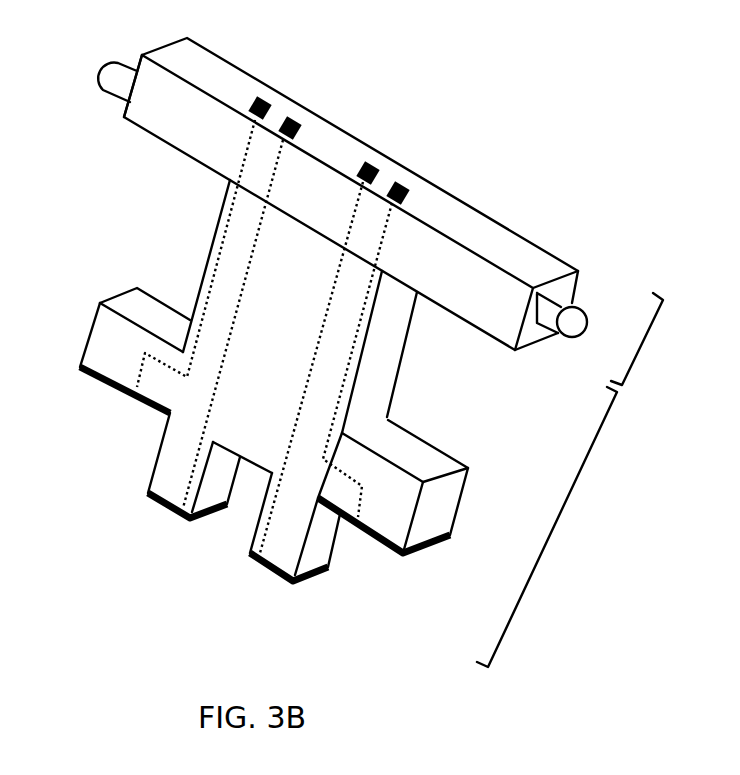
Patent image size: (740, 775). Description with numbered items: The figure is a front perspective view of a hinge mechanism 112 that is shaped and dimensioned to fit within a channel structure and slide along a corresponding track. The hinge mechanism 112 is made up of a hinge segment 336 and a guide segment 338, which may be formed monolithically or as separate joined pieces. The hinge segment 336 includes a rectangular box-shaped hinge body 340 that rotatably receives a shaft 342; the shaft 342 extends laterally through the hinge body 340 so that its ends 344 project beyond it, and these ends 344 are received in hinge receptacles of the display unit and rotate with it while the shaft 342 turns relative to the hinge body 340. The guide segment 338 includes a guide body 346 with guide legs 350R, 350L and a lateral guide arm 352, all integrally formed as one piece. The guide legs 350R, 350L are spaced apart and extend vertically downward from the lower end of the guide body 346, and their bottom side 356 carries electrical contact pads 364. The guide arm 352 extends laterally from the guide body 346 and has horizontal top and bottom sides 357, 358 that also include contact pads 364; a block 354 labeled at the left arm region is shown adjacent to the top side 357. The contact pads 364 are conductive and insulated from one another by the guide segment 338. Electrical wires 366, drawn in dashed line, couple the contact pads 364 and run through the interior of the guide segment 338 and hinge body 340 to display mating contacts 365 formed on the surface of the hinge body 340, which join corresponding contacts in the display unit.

The hinge mechanism 112 is at (424, 112).
The hinge body 340 is at (350, 216).
The shaft 342 is at (104, 55).
The ends of the shaft 344 is at (102, 79).
The display mating contacts 365 is at (265, 100).
The guide body 346 is at (304, 331).
The electrical wires 366 is at (229, 220).
The left block 354 is at (108, 338).
The top side of the guide arm 357 is at (153, 317).
The bottom side of the guide arm 358 is at (103, 370).
The bottom side of the guide legs 356 is at (157, 490).
The right guide leg 350R is at (175, 495).
The left guide leg 350L is at (274, 560).
The lateral guide arm 352 is at (375, 470).
The electrical contact pads 364 is at (367, 538).
The hinge segment 336 is at (645, 343).
The guide segment 338 is at (553, 532).